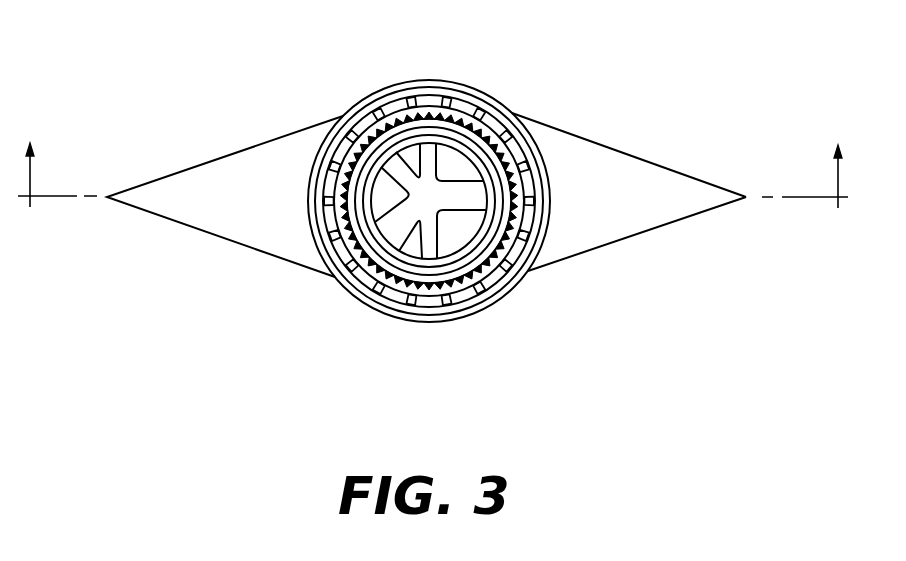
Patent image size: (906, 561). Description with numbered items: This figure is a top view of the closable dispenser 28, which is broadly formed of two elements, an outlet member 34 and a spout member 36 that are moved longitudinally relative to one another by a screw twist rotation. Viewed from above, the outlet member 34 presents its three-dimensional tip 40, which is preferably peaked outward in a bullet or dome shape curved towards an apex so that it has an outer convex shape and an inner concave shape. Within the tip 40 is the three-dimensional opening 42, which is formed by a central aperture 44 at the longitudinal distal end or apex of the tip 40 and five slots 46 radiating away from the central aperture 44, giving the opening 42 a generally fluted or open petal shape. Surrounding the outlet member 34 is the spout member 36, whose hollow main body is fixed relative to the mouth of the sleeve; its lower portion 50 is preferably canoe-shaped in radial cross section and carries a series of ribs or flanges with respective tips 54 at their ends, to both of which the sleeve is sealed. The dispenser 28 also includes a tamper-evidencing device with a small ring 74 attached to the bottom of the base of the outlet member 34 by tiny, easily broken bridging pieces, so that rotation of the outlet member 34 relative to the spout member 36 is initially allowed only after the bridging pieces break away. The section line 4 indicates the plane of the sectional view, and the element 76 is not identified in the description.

The closable dispenser 28 is at (645, 78).
The outlet member 34 is at (541, 246).
The spout member 36 is at (255, 250).
The 3-D tip 40 is at (456, 171).
The 3-D opening 42 is at (420, 223).
The central aperture 44 is at (427, 176).
The slots 46 is at (477, 214).
The lower portion 50 is at (680, 220).
The tips 54 is at (90, 194).
The ring 74 is at (335, 122).
The bearing rollers 76 is at (357, 138).
The section line 4- 4 is at (433, 159).